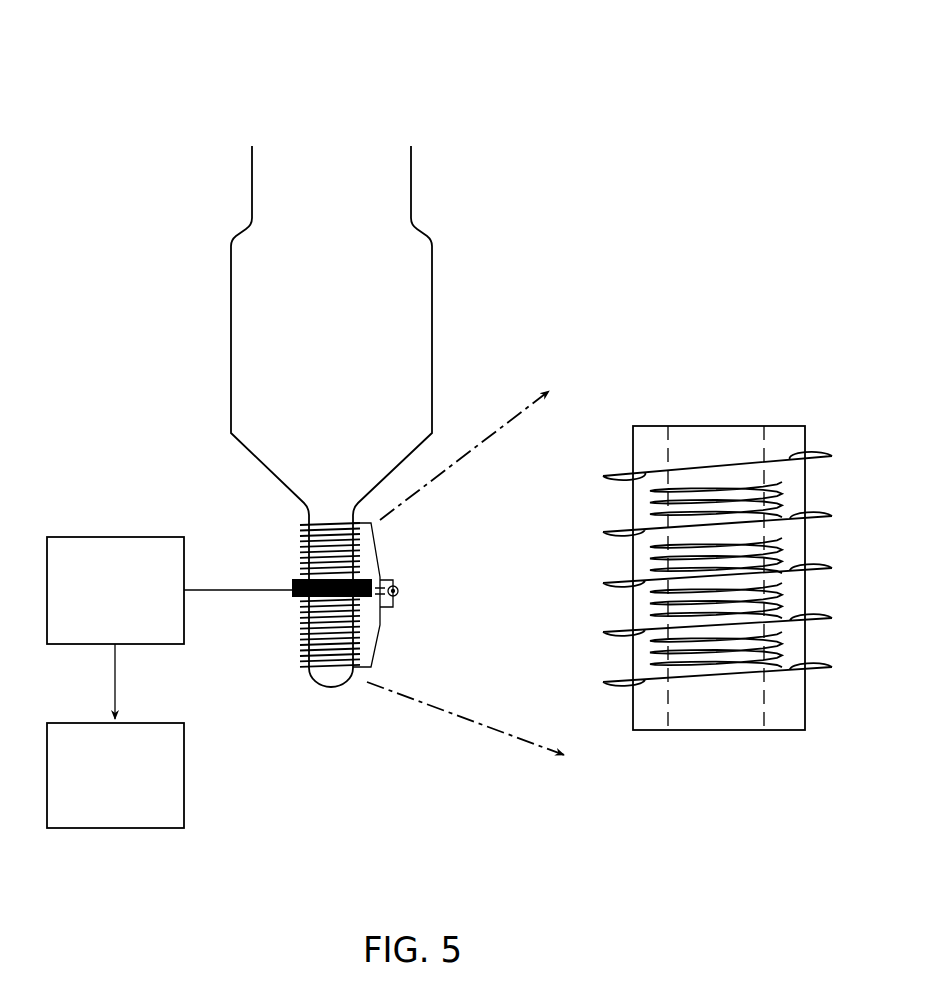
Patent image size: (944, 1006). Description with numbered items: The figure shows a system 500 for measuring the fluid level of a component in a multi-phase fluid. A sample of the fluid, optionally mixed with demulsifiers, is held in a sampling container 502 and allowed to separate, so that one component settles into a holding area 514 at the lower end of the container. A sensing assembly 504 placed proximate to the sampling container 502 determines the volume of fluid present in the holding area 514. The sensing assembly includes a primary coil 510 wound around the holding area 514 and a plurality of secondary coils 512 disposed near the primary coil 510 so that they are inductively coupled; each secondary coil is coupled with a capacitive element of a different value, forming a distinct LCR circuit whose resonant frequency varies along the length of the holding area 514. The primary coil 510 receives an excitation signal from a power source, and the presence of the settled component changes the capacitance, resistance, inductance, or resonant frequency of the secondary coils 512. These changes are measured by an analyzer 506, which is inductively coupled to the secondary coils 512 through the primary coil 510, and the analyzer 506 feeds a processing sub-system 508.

The system 500 is at (688, 66).
The sampling container 502 is at (231, 392).
The sensing assembly 504 is at (300, 656).
The analyzer 506 is at (96, 600).
The processing sub-system 508 is at (96, 786).
The primary coil 510 is at (603, 583).
The secondary coils 512 is at (776, 538).
The holding area 514 is at (715, 718).